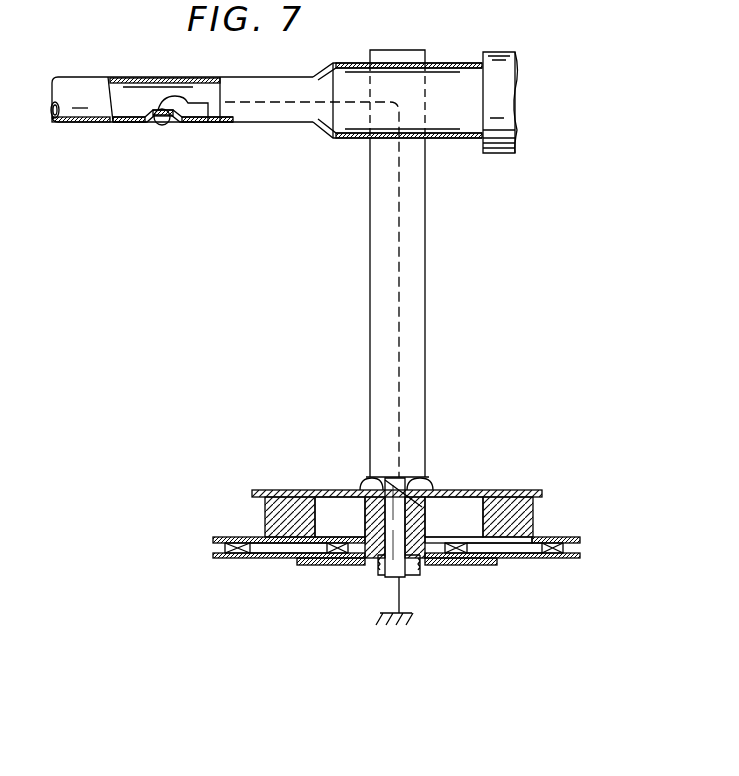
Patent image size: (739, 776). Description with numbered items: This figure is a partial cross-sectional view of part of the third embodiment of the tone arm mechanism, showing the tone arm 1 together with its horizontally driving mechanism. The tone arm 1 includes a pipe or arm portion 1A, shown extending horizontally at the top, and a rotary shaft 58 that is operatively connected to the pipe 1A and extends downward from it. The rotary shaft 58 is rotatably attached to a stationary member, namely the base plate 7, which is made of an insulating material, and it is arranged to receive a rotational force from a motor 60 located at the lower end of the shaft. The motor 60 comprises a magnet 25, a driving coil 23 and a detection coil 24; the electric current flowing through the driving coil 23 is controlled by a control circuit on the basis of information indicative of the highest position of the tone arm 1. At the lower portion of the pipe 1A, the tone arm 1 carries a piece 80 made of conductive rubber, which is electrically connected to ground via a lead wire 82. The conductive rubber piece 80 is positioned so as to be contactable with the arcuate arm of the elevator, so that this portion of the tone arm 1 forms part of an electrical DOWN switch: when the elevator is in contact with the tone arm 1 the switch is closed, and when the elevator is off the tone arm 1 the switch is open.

The tone arm 1 is at (460, 228).
The pipe or arm portion 1A is at (85, 85).
The base plate 7 is at (460, 480).
The driving coil 23 is at (552, 557).
The detection coil 24 is at (337, 553).
The magnet 25 is at (272, 513).
The rotary shaft 58 is at (418, 342).
The motor 60 is at (596, 528).
The conductive rubber piece 80 is at (153, 125).
The lead wire 82 is at (205, 124).